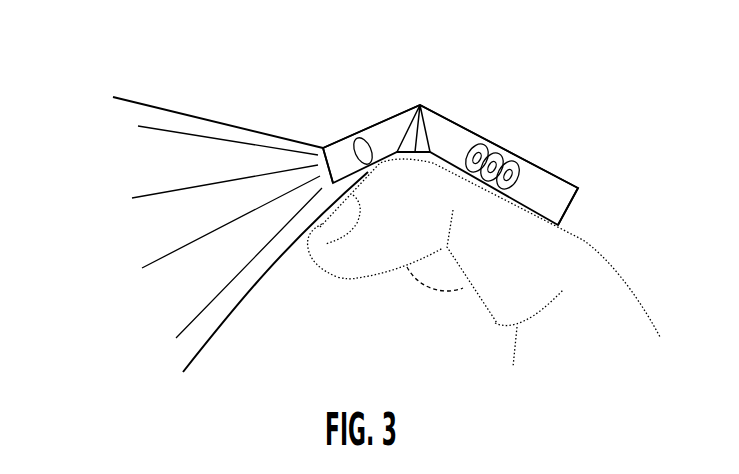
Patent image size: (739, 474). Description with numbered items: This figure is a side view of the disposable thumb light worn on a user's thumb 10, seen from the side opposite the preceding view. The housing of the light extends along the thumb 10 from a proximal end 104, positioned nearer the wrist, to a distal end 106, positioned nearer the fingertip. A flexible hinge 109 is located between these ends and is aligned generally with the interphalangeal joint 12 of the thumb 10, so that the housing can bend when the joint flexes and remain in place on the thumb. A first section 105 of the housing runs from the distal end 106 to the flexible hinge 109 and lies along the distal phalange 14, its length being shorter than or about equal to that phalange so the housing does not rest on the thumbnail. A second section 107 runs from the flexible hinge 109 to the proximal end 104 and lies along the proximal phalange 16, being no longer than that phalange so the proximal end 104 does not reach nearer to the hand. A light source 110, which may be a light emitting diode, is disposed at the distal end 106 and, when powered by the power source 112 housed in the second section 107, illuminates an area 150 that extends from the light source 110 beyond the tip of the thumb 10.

The thumb 10 is at (421, 289).
The interphalangeal joint 12 is at (445, 257).
The distal phalange 14 is at (357, 260).
The proximal phalange 16 is at (512, 307).
The proximal end 104 is at (452, 116).
The first section 105 is at (388, 130).
The distal end 106 is at (322, 147).
The second section 107 is at (453, 140).
The flexible hinge 109 is at (420, 100).
The light source 110 is at (347, 133).
The power source 112 is at (517, 158).
The illuminated area 150 is at (182, 151).